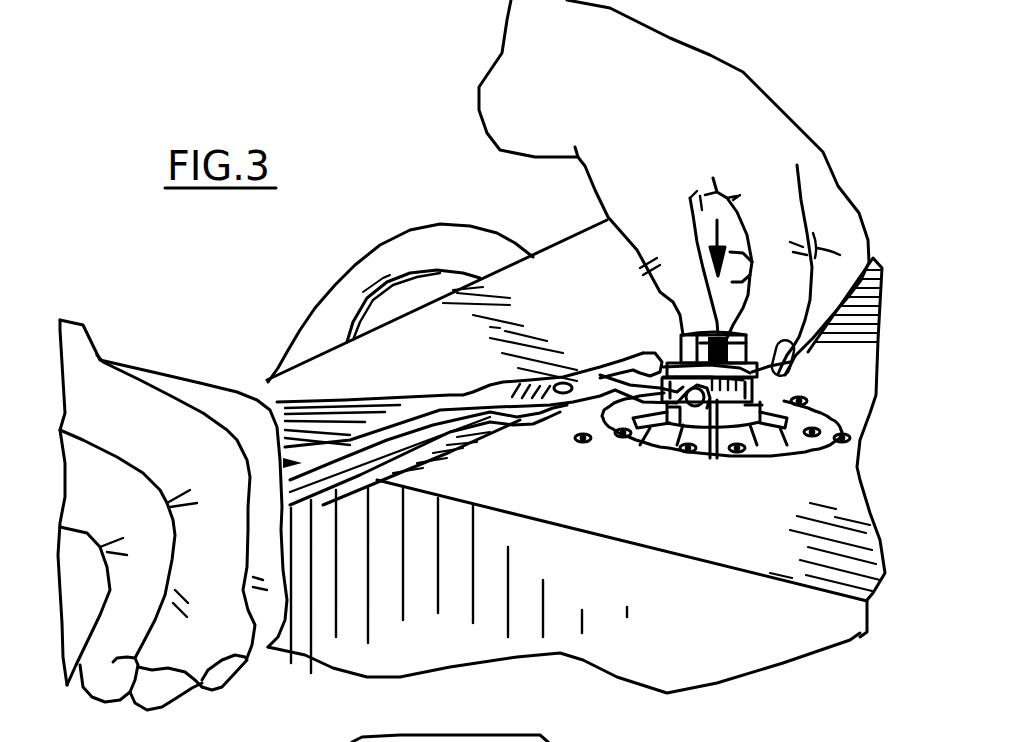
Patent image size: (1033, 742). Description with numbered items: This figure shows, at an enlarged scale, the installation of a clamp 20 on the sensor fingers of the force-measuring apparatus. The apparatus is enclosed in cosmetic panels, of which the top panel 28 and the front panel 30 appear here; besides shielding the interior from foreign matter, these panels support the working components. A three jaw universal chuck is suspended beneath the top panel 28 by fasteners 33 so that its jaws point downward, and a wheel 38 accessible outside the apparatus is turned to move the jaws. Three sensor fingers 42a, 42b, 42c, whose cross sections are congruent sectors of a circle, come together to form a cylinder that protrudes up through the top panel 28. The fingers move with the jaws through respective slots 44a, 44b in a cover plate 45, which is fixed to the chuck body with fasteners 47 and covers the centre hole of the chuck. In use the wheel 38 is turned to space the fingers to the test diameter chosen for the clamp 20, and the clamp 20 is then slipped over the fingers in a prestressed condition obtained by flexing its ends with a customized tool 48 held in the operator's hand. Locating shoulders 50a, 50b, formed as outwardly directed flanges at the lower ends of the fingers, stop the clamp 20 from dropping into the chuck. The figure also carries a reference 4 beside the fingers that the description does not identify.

The pressing direction / finger 4 is at (695, 242).
The clamp 20 is at (760, 292).
The top panel 28 is at (840, 547).
The front panel 30 is at (803, 623).
The fasteners 33 is at (843, 440).
The wheel 38 is at (320, 307).
The sensor finger 42a is at (797, 350).
The sensor finger 42b is at (683, 357).
The sensor finger 42c is at (683, 330).
The slot 44a is at (773, 423).
The slot 44b is at (663, 420).
The cover plate 45 is at (760, 450).
The fasteners 47 is at (737, 452).
The customized tool 48 is at (462, 386).
The locating shoulder 50a is at (782, 405).
The locating shoulder 50b is at (687, 428).